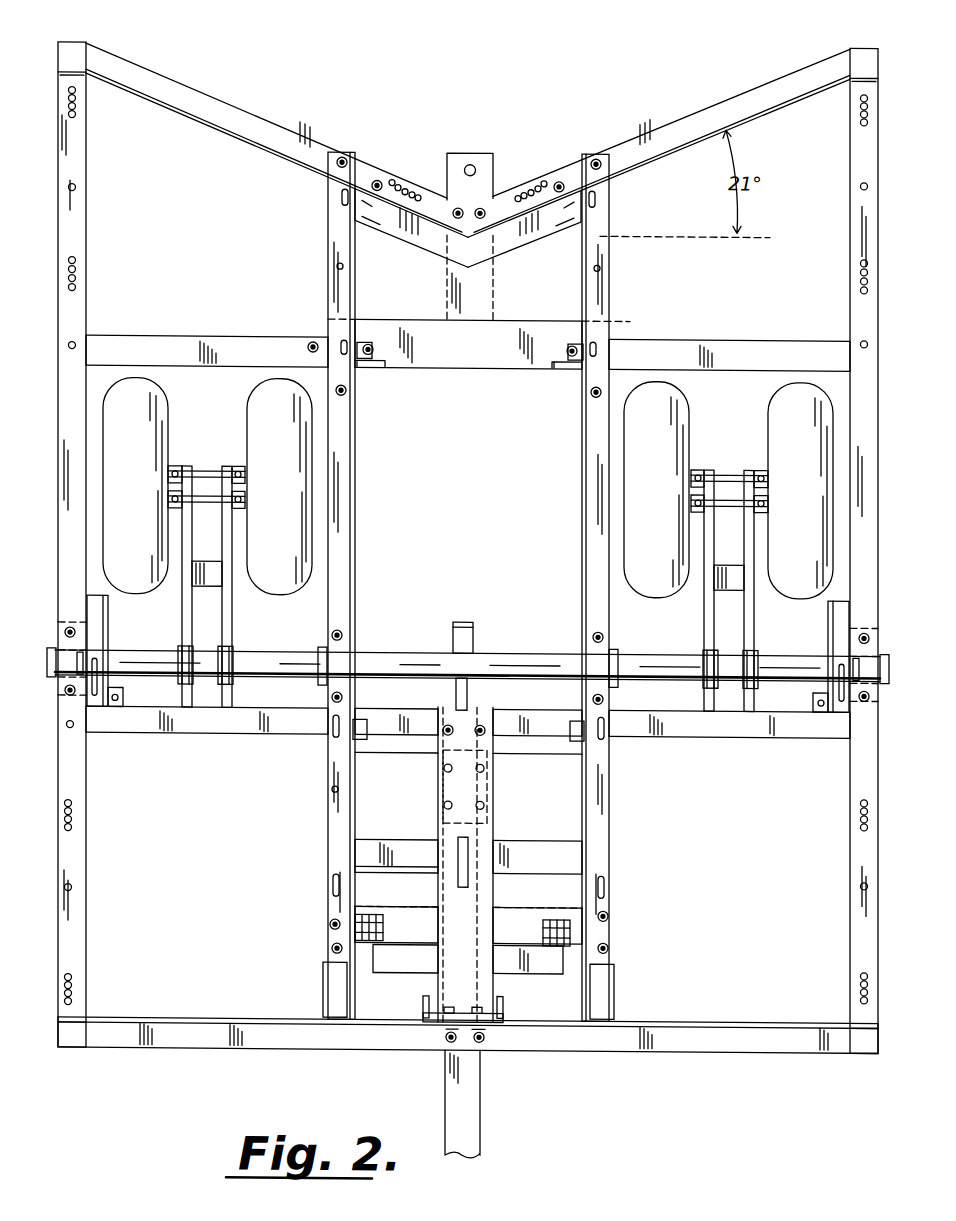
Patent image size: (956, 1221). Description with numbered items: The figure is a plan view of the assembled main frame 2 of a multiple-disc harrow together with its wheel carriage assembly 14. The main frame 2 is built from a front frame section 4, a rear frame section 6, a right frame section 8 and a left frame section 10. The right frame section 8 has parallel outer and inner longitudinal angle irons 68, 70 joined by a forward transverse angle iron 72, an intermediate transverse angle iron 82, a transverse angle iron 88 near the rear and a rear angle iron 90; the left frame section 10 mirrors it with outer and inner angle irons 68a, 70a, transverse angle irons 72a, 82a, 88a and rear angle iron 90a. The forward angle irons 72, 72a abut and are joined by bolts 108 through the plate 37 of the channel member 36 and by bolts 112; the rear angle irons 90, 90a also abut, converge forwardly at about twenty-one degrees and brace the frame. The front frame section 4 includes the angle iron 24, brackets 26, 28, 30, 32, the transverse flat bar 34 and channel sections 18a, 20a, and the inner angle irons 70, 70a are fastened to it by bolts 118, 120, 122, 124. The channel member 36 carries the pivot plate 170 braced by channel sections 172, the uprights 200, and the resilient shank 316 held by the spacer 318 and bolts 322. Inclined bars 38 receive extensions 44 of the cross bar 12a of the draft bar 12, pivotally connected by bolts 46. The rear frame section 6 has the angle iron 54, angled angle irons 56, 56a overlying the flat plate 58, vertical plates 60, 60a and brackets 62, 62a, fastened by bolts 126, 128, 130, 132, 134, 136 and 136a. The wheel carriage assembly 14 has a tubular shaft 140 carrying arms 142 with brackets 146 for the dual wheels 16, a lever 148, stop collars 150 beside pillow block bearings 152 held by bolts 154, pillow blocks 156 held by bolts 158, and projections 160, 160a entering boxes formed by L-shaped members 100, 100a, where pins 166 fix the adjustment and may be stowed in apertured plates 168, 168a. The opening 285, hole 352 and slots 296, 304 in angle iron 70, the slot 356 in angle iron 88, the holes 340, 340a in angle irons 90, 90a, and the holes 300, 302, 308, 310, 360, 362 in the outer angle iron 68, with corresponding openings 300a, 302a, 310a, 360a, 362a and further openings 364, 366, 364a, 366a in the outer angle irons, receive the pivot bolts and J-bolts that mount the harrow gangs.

The main frame 2 is at (628, 161).
The front frame section 4 is at (369, 827).
The rear frame section 6 is at (471, 141).
The right frame section 8 is at (161, 62).
The left frame section 10 is at (744, 78).
The draft bar 12 is at (476, 1080).
The cross bar 12a is at (550, 972).
The wheel carriage assembly 14 is at (412, 640).
The dual wheels 16 is at (684, 405).
The channel section 18a is at (324, 980).
The channel section 20a is at (606, 985).
The angle iron 24 is at (490, 706).
The bracket 26 is at (355, 960).
The bracket 28 is at (606, 933).
The bracket 30 is at (370, 705).
The bracket 32 is at (560, 704).
The intermediate transverse flat bar 34 is at (534, 848).
The channel member 36 is at (438, 1033).
The plate 37 is at (465, 1010).
The bars 38 is at (545, 915).
The extensions 44 is at (556, 914).
The bolts 46 is at (542, 927).
The angle iron 54 is at (424, 366).
The angle iron 56 is at (425, 240).
The angle iron 56a is at (498, 250).
The flat plate 58 is at (493, 297).
The vertical plate 60 is at (368, 224).
The vertical plate 60a is at (563, 224).
The vertical bracket 62 is at (370, 365).
The vertical bracket 62a is at (573, 365).
The outer angle iron 68 is at (60, 470).
The outer angle iron 68a is at (878, 440).
The inner angle iron 70 is at (352, 478).
The inner angle iron 70a is at (610, 820).
The transverse angle iron 72 is at (130, 1044).
The transverse angle iron 72a is at (680, 1042).
The intermediate transverse angle iron 82 is at (168, 733).
The intermediate transverse angle iron 82a is at (700, 733).
The transverse angle iron 88 is at (200, 345).
The transverse angle iron 88a is at (690, 350).
The rear angle iron 90 is at (272, 125).
The rear angle iron 90a is at (804, 78).
The inverted L-shaped member 100 is at (117, 624).
The inverted L-shaped member 100a is at (819, 632).
The bolts 108 is at (445, 1012).
The bolts 112 is at (484, 1038).
The bolts 118 is at (606, 910).
The bolts 120 is at (608, 945).
The bolts 122 is at (367, 725).
The bolts 124 is at (570, 725).
The bolts 126 is at (483, 203).
The bolts 128 is at (596, 155).
The bolts 130 is at (560, 178).
The bolts 132 is at (600, 207).
The bolts 134 is at (570, 344).
The bolts 136 is at (346, 391).
The bolts 136a is at (592, 391).
The tubular shaft 140 is at (533, 660).
The arms 142 is at (752, 604).
The brackets 146 is at (688, 468).
The lever 148 is at (470, 650).
The stop collars 150 is at (614, 650).
The pillow block bearings 152 is at (605, 628).
The bolts 154 is at (606, 693).
The pillow block 156 is at (878, 605).
The bolts 158 is at (62, 700).
The projection 160 is at (110, 654).
The projection 160a is at (835, 680).
The pin 166 is at (62, 633).
The apertured plate 168 is at (125, 695).
The apertured plate 168a is at (822, 706).
The pivot plate 170 is at (470, 857).
The channel sections 172 is at (482, 830).
The uprights 200 is at (505, 1000).
The opening 285 is at (331, 787).
The elongated slot 296 is at (335, 880).
The holes 300 is at (72, 993).
The holes 300a is at (860, 985).
The holes 302 is at (72, 812).
The holes 302a is at (860, 812).
The elongated slot 304 is at (336, 732).
The hole 308 is at (73, 726).
The hole 310 is at (72, 887).
The hole 310a is at (860, 880).
The resilient shank 316 is at (462, 618).
The spacer 318 is at (444, 782).
The bolts 322 is at (483, 790).
The holes 340 is at (398, 180).
The holes 340a is at (538, 180).
The hole 352 is at (340, 190).
The slot 356 is at (310, 342).
The holes 360 is at (76, 287).
The holes 360a is at (860, 284).
The holes 362 is at (76, 113).
The holes 362a is at (860, 113).
The hole 364 is at (75, 342).
The hole 364a is at (861, 336).
The hole 366 is at (75, 184).
The hole 366a is at (861, 178).